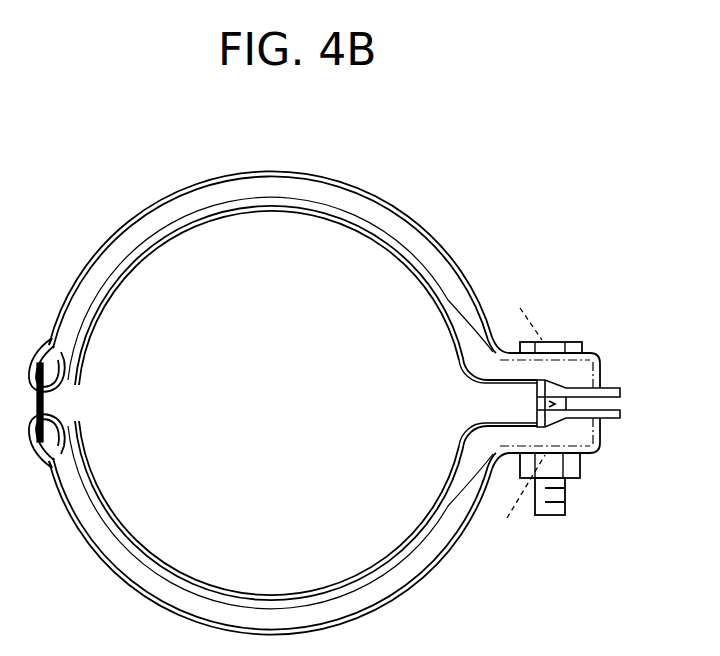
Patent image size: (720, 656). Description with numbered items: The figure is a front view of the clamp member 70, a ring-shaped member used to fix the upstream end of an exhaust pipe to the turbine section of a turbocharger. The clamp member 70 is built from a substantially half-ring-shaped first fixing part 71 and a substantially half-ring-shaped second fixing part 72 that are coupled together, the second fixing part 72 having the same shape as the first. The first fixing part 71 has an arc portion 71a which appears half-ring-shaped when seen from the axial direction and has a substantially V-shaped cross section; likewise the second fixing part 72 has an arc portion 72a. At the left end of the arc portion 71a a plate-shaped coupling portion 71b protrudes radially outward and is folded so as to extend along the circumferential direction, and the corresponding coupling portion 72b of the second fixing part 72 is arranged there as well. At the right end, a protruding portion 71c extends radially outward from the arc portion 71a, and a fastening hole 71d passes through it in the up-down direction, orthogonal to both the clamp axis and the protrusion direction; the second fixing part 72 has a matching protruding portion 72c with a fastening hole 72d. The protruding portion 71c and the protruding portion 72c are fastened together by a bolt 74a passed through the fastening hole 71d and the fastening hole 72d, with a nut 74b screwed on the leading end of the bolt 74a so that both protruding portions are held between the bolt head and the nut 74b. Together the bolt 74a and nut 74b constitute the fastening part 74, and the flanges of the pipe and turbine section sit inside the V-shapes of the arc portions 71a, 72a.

The clamp member 70 is at (508, 188).
The first fixing part 71 is at (355, 185).
The arc portion 71a is at (186, 235).
The coupling portion 71b is at (47, 340).
The protruding portion 71c is at (595, 352).
The fastening hole 71d is at (517, 310).
The second fixing part 72 is at (405, 596).
The arc portion 72a is at (185, 570).
The coupling portion 72b is at (50, 465).
The protruding portion 72c is at (600, 442).
The fastening hole 72d is at (518, 501).
The fastening part 74 is at (599, 391).
The bolt 74a is at (573, 341).
The nut 74b is at (580, 470).